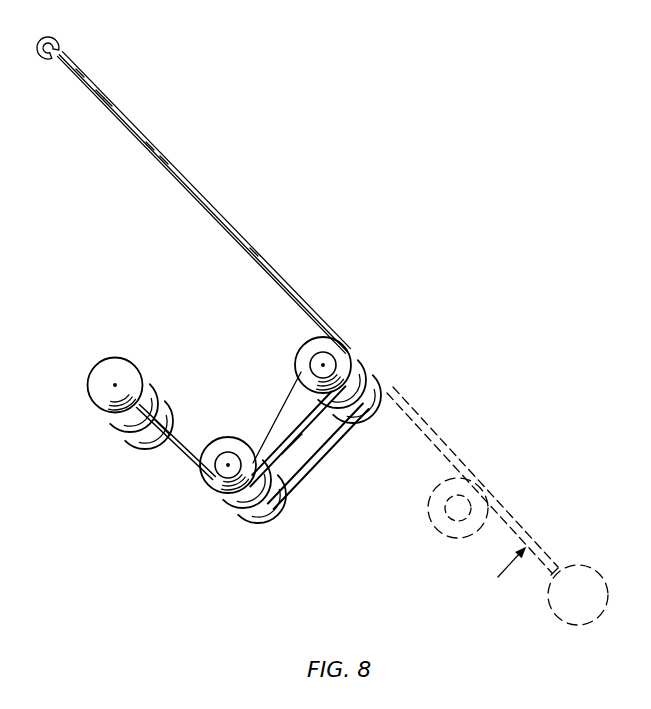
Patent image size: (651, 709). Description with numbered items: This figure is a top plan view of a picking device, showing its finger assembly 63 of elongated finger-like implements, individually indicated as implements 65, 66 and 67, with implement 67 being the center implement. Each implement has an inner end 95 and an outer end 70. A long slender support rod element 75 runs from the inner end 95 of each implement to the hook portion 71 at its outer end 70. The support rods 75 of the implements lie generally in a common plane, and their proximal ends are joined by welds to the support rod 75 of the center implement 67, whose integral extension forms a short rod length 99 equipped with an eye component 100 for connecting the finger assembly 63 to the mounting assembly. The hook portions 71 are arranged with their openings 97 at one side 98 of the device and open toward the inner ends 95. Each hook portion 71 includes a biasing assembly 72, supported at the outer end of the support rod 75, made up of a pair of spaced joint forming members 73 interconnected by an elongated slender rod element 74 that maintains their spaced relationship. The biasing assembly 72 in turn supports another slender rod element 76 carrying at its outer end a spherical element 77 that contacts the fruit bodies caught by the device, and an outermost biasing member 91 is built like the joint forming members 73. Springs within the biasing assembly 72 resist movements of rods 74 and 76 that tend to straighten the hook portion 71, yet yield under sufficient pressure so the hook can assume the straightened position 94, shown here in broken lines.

The eye component 100 is at (63, 33).
The short rod length 99 is at (83, 72).
The inner ends of the implements 95 is at (102, 90).
The finger assembly 63 is at (108, 107).
The side of the device 98 is at (143, 152).
The finger-like implement 65 is at (167, 163).
The support rod element 75 is at (215, 210).
The hook portion 71 is at (268, 267).
The opening of the hook portion 97 is at (129, 360).
The spherical element 77 is at (92, 404).
The finger-like implement 66 is at (158, 385).
The center finger-like implement 67 is at (172, 405).
The slender rod element 76 is at (183, 460).
The outer end of the implement 70 is at (168, 445).
The outermost biasing member 91 is at (212, 490).
The joint forming members 73 is at (248, 434).
The slender rod element 74 is at (301, 425).
The biasing assembly 72 is at (289, 432).
The straightened position 94 is at (503, 574).